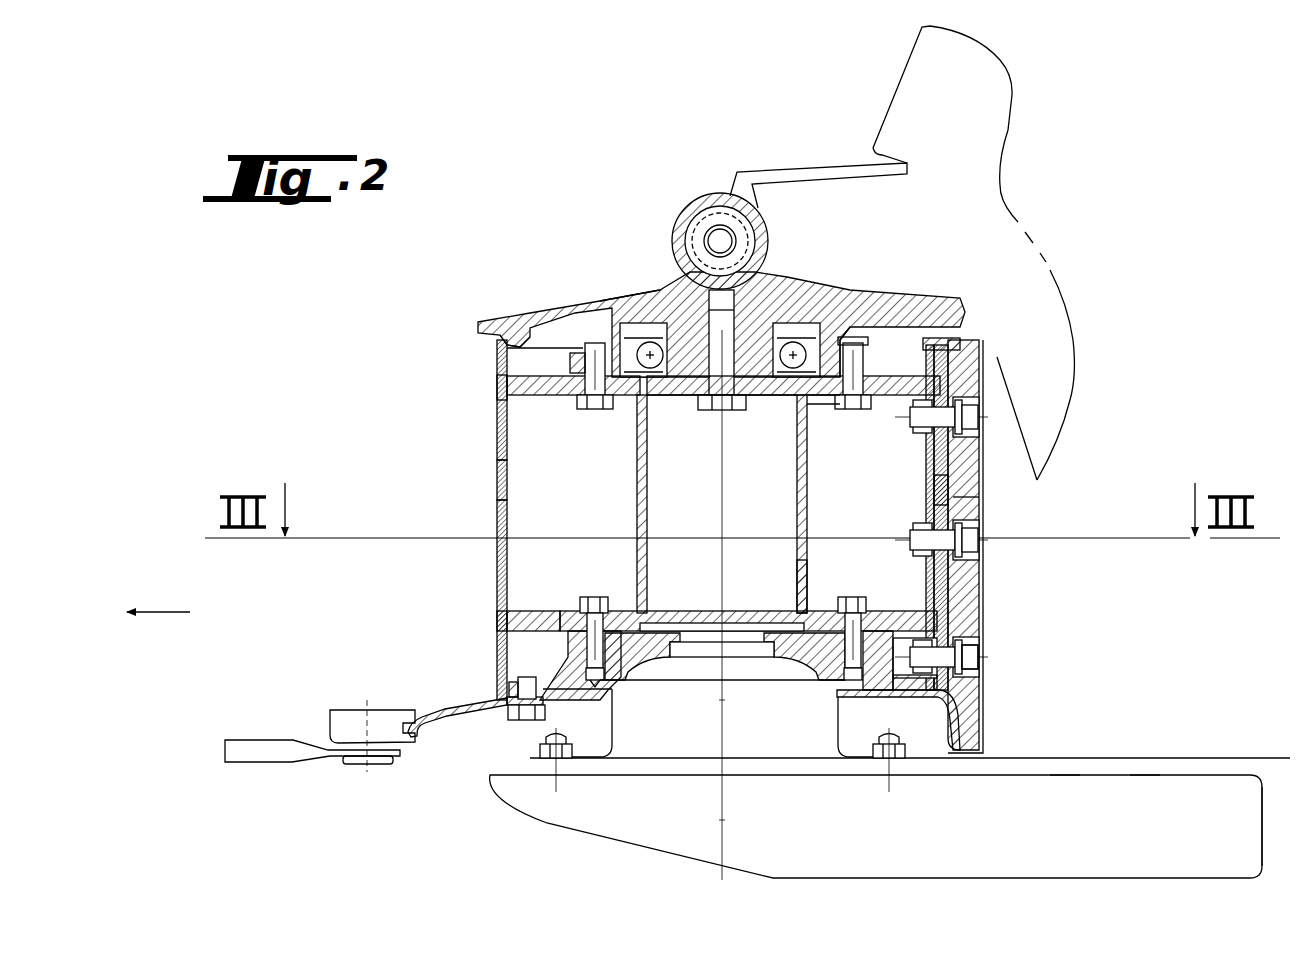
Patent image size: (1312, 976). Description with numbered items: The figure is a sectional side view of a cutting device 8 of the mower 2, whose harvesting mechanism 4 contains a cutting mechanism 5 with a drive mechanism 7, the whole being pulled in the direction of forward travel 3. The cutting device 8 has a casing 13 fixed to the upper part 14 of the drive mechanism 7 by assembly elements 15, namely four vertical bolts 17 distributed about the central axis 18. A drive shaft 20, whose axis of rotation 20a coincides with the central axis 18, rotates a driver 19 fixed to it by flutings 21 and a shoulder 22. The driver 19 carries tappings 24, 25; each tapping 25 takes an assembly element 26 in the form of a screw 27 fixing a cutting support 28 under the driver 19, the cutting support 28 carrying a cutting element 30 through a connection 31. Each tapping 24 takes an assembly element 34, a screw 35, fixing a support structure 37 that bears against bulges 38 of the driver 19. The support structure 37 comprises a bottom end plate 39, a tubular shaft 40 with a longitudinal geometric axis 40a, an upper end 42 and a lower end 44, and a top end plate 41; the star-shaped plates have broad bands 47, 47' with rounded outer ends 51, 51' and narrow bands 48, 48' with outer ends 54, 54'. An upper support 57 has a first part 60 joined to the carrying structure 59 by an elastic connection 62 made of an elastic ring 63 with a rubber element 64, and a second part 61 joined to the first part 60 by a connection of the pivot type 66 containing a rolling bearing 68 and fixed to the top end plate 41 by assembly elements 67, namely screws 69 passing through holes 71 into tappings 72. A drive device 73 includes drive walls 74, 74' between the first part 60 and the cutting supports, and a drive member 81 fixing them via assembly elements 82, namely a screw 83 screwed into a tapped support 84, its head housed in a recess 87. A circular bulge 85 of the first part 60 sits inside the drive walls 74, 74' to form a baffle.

The mower 2 is at (1196, 774).
The direction of forward travel 3 is at (165, 612).
The harvesting mechanism 4 is at (1258, 774).
The cutting mechanism 5 is at (1140, 775).
The drive mechanism 7 is at (1060, 782).
The cutting device 8 is at (496, 476).
The casing 13 is at (686, 752).
The upper part 14 is at (1115, 757).
The assembly elements 15 is at (540, 757).
The bolts 17 is at (566, 752).
The central axis 18 is at (722, 855).
The axis of rotation 20a is at (722, 680).
The longitudinal geometric axis 40a is at (722, 820).
The driver 19 is at (645, 668).
The drive shaft 20 is at (700, 650).
The flutings 21 is at (742, 655).
The shoulder 22 is at (717, 630).
The tappings 24 is at (880, 625).
The tappings 25 is at (517, 690).
The assembly element 26 is at (504, 726).
The screw 27 is at (522, 723).
The cutting support 28 is at (436, 710).
The cutting element 30 is at (232, 758).
The connection 31 is at (352, 766).
The assembly element 34 is at (640, 610).
The screw 35 is at (591, 598).
The support structure 37 is at (636, 497).
The bulges 38 is at (572, 648).
The bottom end plate 39 is at (528, 611).
The tubular shaft 40 is at (648, 497).
The top end plate 41 is at (545, 397).
The upper end 42 is at (800, 406).
The lower end 44 is at (800, 611).
The broad band 47 is at (491, 593).
The broad band 47' is at (449, 400).
The narrow band 48 is at (999, 614).
The narrow band 48' is at (1024, 413).
The outer end 51 is at (466, 614).
The outer end 51' is at (533, 371).
The outer end 54 is at (1007, 645).
The outer end 54' is at (1043, 439).
The upper support 57 is at (565, 306).
The carrying structure 59 is at (911, 108).
The first part 60 is at (607, 302).
The second part 61 is at (832, 340).
The elastic connection 62 is at (711, 195).
The elastic ring 63 is at (695, 214).
The rubber element 64 is at (688, 230).
The connection of the pivot type 66 is at (797, 346).
The assembly elements 67 is at (595, 411).
The rolling bearing 68 is at (650, 352).
The screws 69 is at (810, 397).
The holes 71 is at (866, 397).
The tappings 72 is at (580, 356).
The drive device 73 is at (496, 527).
The drive wall 74 is at (435, 404).
The drive wall 74' is at (980, 475).
The drive member 81 is at (955, 497).
The assembly elements 82 is at (968, 418).
The screw 83 is at (970, 660).
The tapped support 84 is at (927, 462).
The circular bulge 85 is at (514, 342).
The recess 87 is at (978, 528).